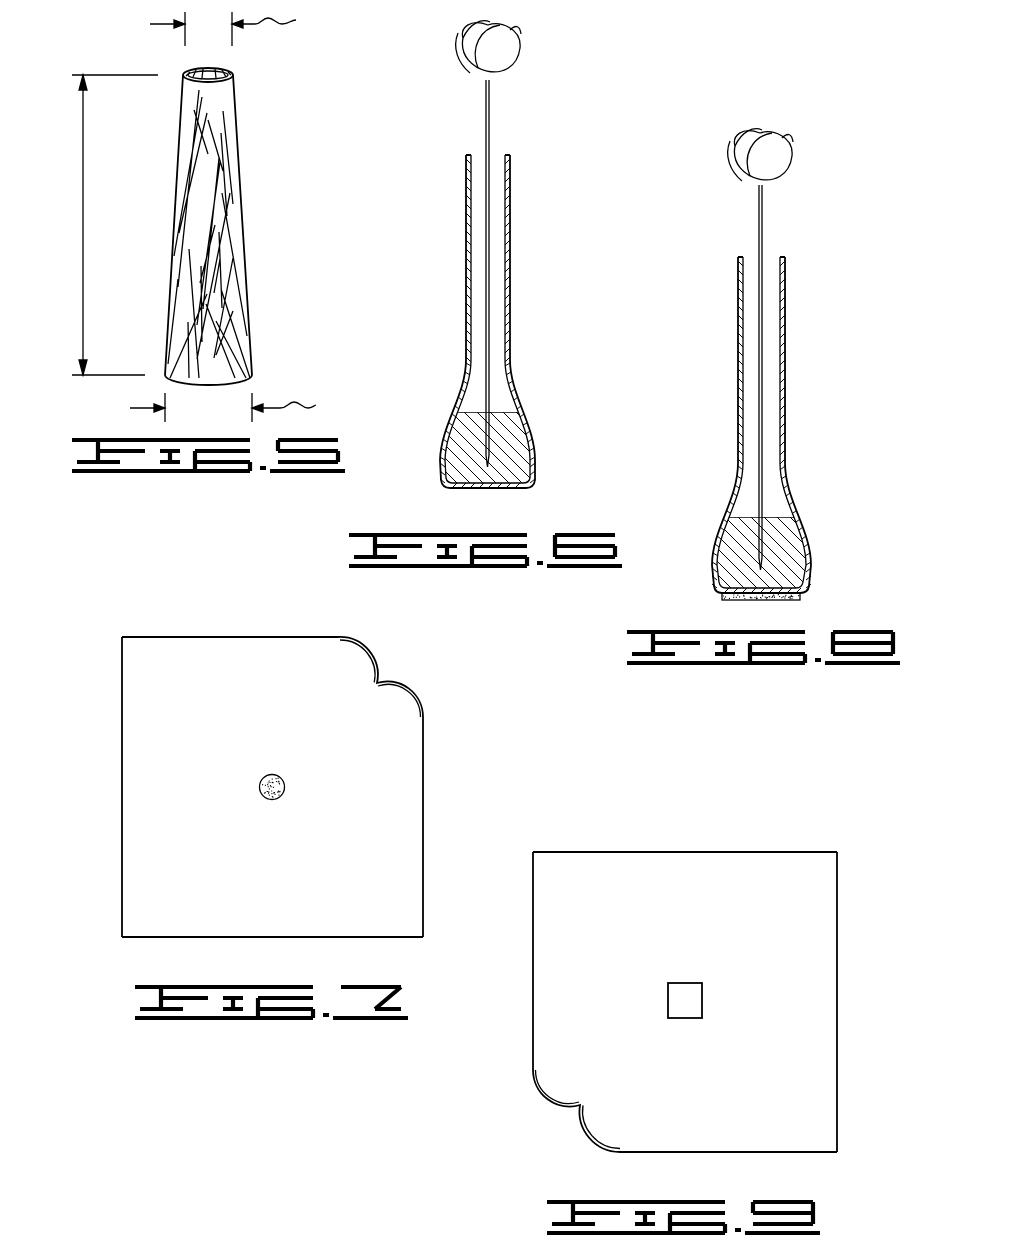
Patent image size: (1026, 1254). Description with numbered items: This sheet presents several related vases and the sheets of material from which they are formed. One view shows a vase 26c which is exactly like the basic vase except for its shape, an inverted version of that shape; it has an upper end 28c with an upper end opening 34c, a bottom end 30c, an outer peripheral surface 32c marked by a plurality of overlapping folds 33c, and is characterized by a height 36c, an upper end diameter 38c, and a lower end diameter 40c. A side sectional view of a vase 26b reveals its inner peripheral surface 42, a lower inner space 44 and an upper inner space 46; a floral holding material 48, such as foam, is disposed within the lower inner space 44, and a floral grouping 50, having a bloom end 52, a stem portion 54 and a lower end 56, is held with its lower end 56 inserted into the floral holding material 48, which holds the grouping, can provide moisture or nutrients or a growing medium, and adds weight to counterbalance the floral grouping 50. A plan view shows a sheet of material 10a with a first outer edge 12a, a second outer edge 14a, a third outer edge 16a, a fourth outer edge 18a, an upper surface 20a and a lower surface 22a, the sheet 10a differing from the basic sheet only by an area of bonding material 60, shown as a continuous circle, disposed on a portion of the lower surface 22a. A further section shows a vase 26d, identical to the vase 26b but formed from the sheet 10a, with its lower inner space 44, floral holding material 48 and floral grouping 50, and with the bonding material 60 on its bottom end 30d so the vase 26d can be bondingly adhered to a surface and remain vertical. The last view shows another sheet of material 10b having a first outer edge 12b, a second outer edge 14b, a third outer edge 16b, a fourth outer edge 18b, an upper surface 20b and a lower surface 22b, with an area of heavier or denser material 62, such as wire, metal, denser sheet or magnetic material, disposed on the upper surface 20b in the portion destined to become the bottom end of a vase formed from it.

In FIG. 7, the sheet of material 10a is at (263, 773).
In FIG. 9, the sheet of material 10b is at (686, 987).
In FIG. 7, the first outer edge 12a is at (424, 768).
In FIG. 9, the first outer edge 12b is at (533, 1028).
In FIG. 7, the second outer edge 14a is at (122, 870).
In FIG. 9, the second outer edge 14b is at (838, 992).
In FIG. 7, the third outer edge 16a is at (240, 636).
In FIG. 9, the third outer edge 16b is at (685, 851).
In FIG. 7, the fourth outer edge 18a is at (138, 940).
In FIG. 9, the fourth outer edge 18b is at (818, 1153).
In FIG. 7, the upper surface 20a is at (383, 676).
In FIG. 9, the upper surface 20b is at (597, 965).
In FIG. 7, the lower surface 22a is at (147, 754).
In FIG. 9, the lower surface 22b is at (575, 1108).
In FIG. 6, the vase 26b is at (494, 321).
In FIG. 5, the vase 26c is at (247, 214).
In FIG. 8, the vase 26d is at (776, 437).
In FIG. 5, the upper end 28c is at (236, 72).
In FIG. 5, the bottom end 30c is at (250, 378).
In FIG. 8, the bottom end 30d is at (805, 595).
In FIG. 5, the outer peripheral surface 32c is at (226, 276).
In FIG. 5, the overlapping folds 33c is at (218, 152).
In FIG. 5, the upper end opening 34c is at (215, 74).
In FIG. 5, the height 36c is at (83, 218).
In FIG. 5, the upper end diameter 38c is at (247, 27).
In FIG. 5, the lower end diameter 40c is at (246, 408).
In FIG. 6, the inner peripheral surface 42 is at (502, 350).
In FIG. 6, the lower inner space 44 is at (502, 391).
In FIG. 8, the lower inner space 44 is at (773, 488).
In FIG. 6, the upper inner space 46 is at (478, 222).
In FIG. 6, the floral holding material 48 is at (464, 450).
In FIG. 8, the floral holding material 48 is at (780, 543).
In FIG. 6, the floral grouping 50 is at (531, 237).
In FIG. 8, the floral grouping 50 is at (798, 180).
In FIG. 6, the bloom end 52 is at (505, 28).
In FIG. 6, the stem portion 54 is at (490, 186).
In FIG. 6, the lower end 56 is at (489, 450).
In FIG. 8, the bonding material 60 is at (724, 598).
In FIG. 7, the bonding material 60 is at (282, 797).
In FIG. 9, the heavier or denser material 62 is at (703, 1008).